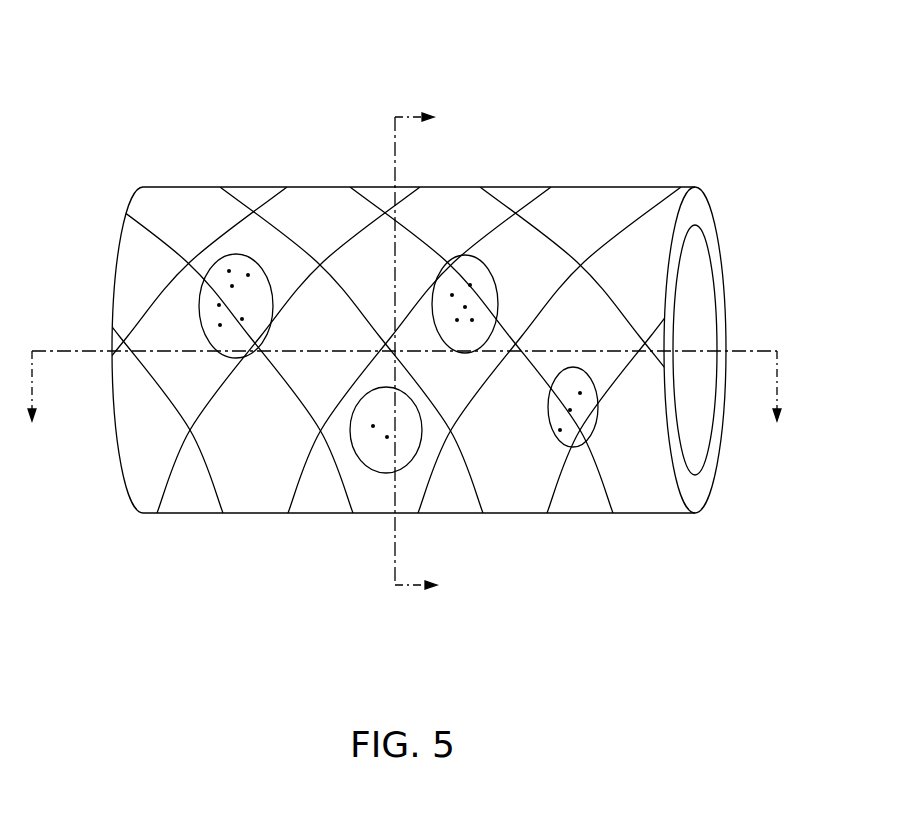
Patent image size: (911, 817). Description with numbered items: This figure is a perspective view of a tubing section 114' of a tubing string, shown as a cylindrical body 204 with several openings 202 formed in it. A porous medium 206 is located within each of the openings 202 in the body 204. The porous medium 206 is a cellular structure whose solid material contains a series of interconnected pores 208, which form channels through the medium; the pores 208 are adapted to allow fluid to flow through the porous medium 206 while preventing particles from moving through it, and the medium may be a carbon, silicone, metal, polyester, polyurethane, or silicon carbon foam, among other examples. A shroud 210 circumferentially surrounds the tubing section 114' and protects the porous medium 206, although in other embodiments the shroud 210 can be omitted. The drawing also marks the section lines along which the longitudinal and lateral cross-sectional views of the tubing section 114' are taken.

The tubing section 114' is at (405, 308).
The openings 202 is at (240, 361).
The body 204 is at (613, 203).
The porous medium 206 is at (467, 307).
The pores 208 is at (229, 271).
The shroud 210 is at (150, 460).